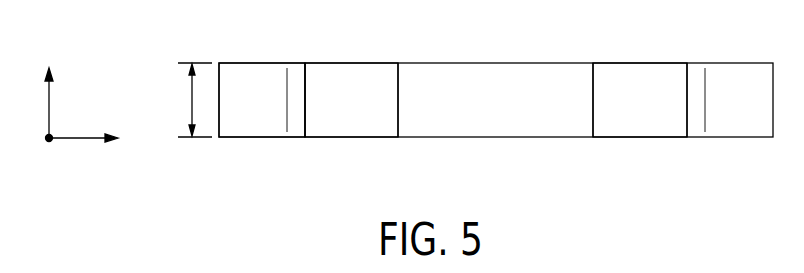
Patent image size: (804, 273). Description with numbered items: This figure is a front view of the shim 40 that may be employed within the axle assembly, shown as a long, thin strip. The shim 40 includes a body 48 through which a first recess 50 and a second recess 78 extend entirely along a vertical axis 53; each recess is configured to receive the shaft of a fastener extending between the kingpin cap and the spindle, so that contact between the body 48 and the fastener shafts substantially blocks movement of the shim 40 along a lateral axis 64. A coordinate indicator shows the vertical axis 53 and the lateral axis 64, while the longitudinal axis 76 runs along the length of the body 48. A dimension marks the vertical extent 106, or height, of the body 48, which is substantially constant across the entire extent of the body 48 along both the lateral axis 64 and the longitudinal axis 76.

The shim 40 is at (297, 158).
The body 48 is at (262, 63).
The first recess 50 is at (350, 80).
The second recess 78 is at (641, 80).
The vertical extent 106 is at (190, 104).
The vertical axis 53 is at (46, 109).
The lateral axis 64 is at (79, 136).
The longitudinal axis 76 is at (51, 142).